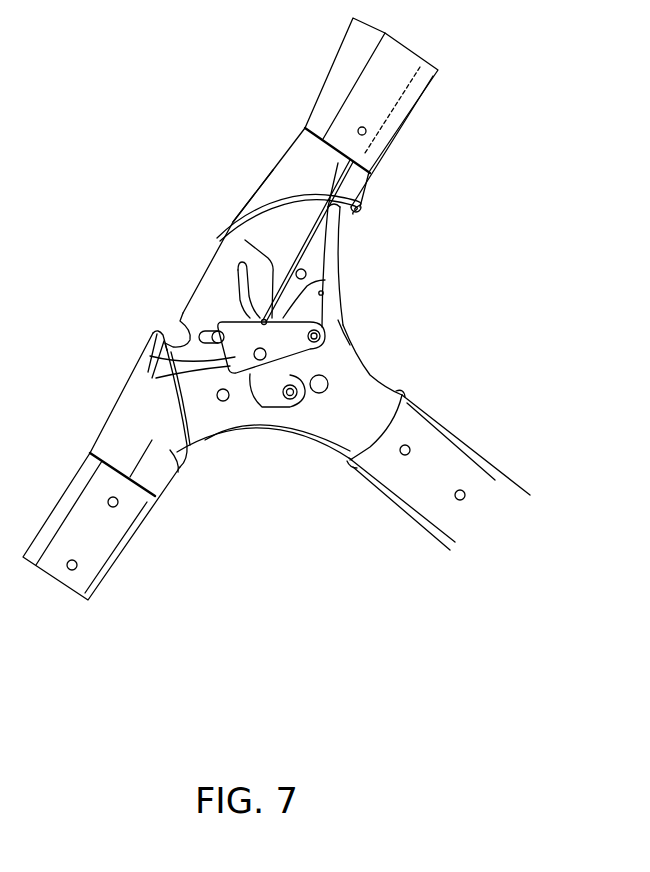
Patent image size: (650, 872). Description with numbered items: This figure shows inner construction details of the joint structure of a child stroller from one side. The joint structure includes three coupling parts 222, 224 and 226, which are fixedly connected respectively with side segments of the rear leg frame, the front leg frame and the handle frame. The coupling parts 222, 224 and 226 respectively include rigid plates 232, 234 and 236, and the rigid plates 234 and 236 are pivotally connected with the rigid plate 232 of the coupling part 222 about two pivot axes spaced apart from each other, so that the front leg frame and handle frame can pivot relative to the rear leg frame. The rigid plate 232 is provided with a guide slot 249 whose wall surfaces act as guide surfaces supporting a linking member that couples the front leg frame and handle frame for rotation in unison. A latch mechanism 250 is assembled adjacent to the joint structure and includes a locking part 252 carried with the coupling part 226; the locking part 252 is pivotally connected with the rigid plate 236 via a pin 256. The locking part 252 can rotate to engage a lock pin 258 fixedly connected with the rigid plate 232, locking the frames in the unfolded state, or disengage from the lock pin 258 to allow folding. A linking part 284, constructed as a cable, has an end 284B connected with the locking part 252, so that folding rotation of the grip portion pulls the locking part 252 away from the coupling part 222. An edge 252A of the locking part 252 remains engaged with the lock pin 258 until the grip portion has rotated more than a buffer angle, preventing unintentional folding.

The coupling part 222 is at (388, 368).
The coupling part 224 is at (138, 415).
The coupling part 226 is at (286, 164).
The rigid plate 232 is at (205, 297).
The rigid plate 234 is at (178, 452).
The rigid plate 236 is at (322, 230).
The guide slot 249 is at (228, 272).
The latch mechanism 250 is at (343, 323).
The locking part 252 is at (243, 370).
The edge 252A is at (155, 380).
The pin 256 is at (337, 330).
The lock pin 258 is at (183, 320).
The linking part 284 is at (312, 242).
The end 284B is at (318, 287).